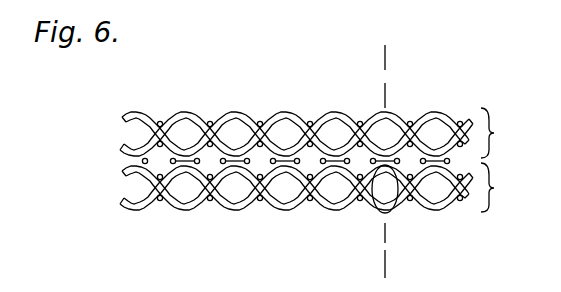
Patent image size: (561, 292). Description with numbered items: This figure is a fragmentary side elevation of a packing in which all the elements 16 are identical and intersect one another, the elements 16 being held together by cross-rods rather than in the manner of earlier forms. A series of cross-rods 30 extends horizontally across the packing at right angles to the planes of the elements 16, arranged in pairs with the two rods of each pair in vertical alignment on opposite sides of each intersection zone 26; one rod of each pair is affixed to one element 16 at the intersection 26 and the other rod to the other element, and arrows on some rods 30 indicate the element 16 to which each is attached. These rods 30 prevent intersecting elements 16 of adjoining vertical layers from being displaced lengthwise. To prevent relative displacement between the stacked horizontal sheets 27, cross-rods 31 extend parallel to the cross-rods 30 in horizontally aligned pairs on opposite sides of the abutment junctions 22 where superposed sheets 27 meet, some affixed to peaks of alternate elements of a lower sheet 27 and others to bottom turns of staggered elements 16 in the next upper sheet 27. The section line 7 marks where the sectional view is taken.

The packing element 16 is at (188, 105).
The abutment junction 22 is at (140, 161).
The intersection zone 26 is at (150, 133).
The horizontal sheet 27 is at (501, 160).
The cross-rod 30 is at (266, 127).
The cross-rod 31 is at (455, 162).
The section line 7 is at (390, 63).